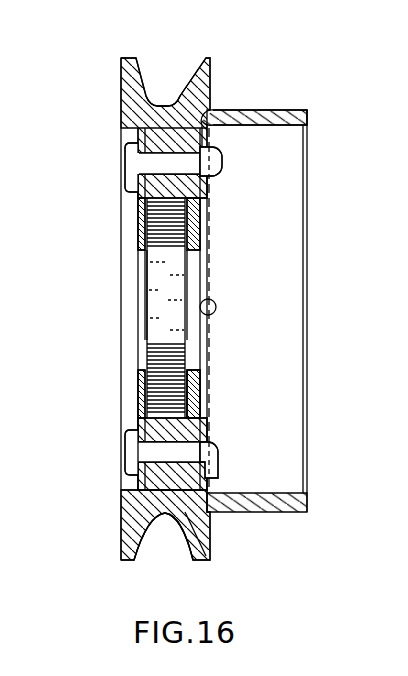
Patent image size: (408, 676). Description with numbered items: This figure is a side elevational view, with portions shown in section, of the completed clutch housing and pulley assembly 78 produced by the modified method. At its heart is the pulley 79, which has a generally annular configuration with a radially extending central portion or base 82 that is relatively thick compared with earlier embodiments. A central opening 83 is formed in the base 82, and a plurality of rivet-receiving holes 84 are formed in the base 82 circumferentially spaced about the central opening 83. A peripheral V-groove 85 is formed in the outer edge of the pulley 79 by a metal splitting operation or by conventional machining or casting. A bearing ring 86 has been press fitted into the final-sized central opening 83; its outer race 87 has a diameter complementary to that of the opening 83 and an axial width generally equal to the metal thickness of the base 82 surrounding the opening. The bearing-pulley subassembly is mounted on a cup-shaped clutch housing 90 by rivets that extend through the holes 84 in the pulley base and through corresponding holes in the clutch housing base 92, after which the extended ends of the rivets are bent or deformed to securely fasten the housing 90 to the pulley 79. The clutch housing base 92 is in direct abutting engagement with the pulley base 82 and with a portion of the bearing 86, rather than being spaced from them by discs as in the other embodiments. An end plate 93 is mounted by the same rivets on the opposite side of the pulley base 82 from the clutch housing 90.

The clutch housing and pulley assembly 78 is at (236, 80).
The pulley 79 is at (119, 250).
The base 82 is at (140, 492).
The central opening 83 is at (148, 214).
The rivet-receiving holes 84 is at (168, 117).
The peripheral V-groove 85 is at (183, 543).
The bearing ring 86 is at (162, 310).
The outer race 87 is at (172, 282).
The clutch housing 90 is at (265, 330).
The clutch housing base 92 is at (190, 381).
The end plate 93 is at (142, 388).